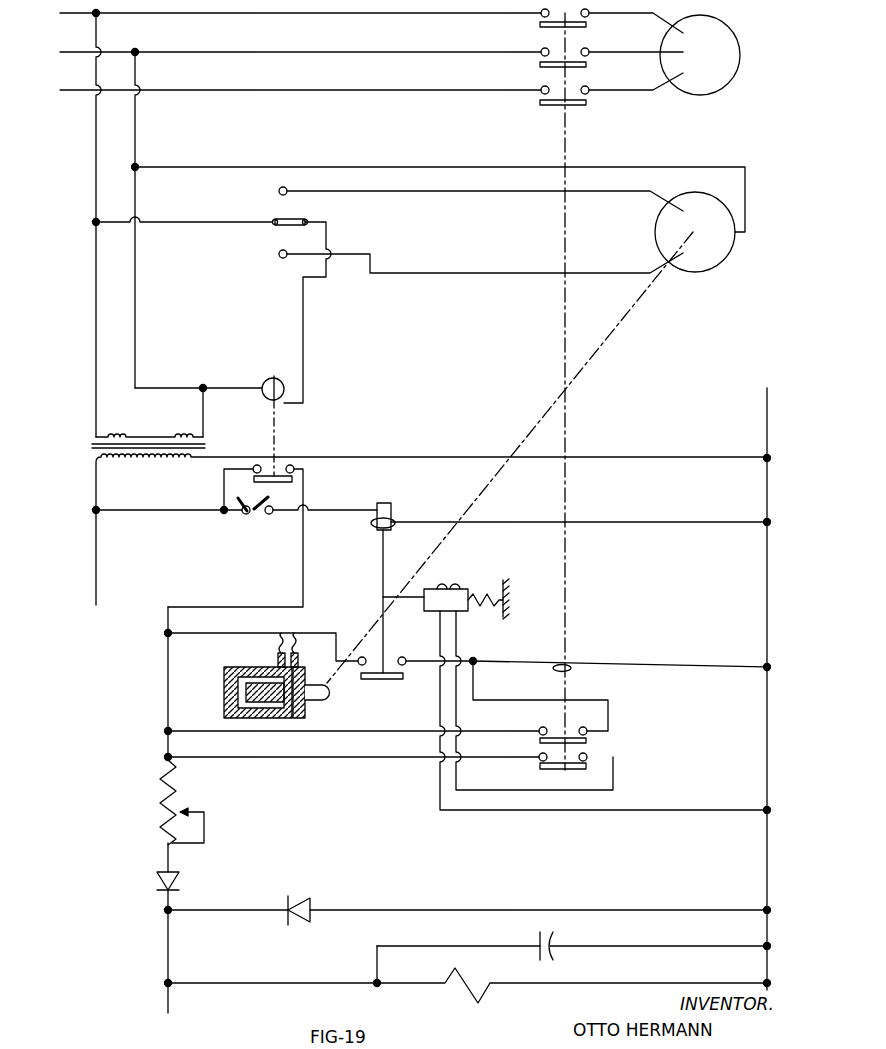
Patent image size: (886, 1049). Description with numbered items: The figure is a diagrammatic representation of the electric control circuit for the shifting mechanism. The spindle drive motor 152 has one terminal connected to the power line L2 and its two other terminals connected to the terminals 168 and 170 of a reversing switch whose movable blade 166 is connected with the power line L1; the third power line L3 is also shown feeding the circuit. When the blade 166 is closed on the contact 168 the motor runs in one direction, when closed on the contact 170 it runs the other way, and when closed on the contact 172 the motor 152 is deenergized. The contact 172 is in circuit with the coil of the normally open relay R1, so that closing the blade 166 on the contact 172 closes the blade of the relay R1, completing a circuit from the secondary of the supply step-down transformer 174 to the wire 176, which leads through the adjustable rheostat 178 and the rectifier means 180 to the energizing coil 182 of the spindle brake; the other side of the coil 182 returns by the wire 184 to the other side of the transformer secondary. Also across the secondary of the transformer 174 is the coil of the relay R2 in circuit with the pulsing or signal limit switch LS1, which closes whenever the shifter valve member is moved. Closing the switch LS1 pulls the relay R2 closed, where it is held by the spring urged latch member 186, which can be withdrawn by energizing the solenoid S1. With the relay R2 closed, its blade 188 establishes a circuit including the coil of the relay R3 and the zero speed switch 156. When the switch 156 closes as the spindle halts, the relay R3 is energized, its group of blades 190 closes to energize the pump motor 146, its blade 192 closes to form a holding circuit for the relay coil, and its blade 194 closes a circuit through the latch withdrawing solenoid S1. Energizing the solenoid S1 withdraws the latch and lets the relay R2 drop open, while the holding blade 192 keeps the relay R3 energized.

The power line L1 is at (96, 235).
The power line L2 is at (152, 137).
The supply line L3 is at (356, 86).
The pump motor 146 is at (728, 52).
The spindle drive motor 152 is at (698, 270).
The zero speed switch 156 is at (306, 713).
The movable blade 166 is at (286, 227).
The terminal 168 is at (277, 192).
The terminal 170 is at (283, 259).
The contact 172 is at (308, 222).
The supply step-down transformer 174 is at (232, 420).
The wire 176 is at (303, 562).
The adjustable rheostat 178 is at (170, 804).
The rectifier means 180 is at (176, 879).
The energizing coil 182 is at (468, 985).
The wire 184 is at (767, 612).
The latch member 186 is at (414, 598).
The blade 188 is at (371, 678).
The group of blades 190 is at (578, 112).
The blade 192 is at (592, 741).
The blade 194 is at (586, 768).
The relay R1 is at (262, 435).
The relay R2 is at (393, 511).
The relay R3 is at (563, 668).
The solenoid S1 is at (451, 613).
The pulsing or signal limit switch LS1 is at (258, 513).